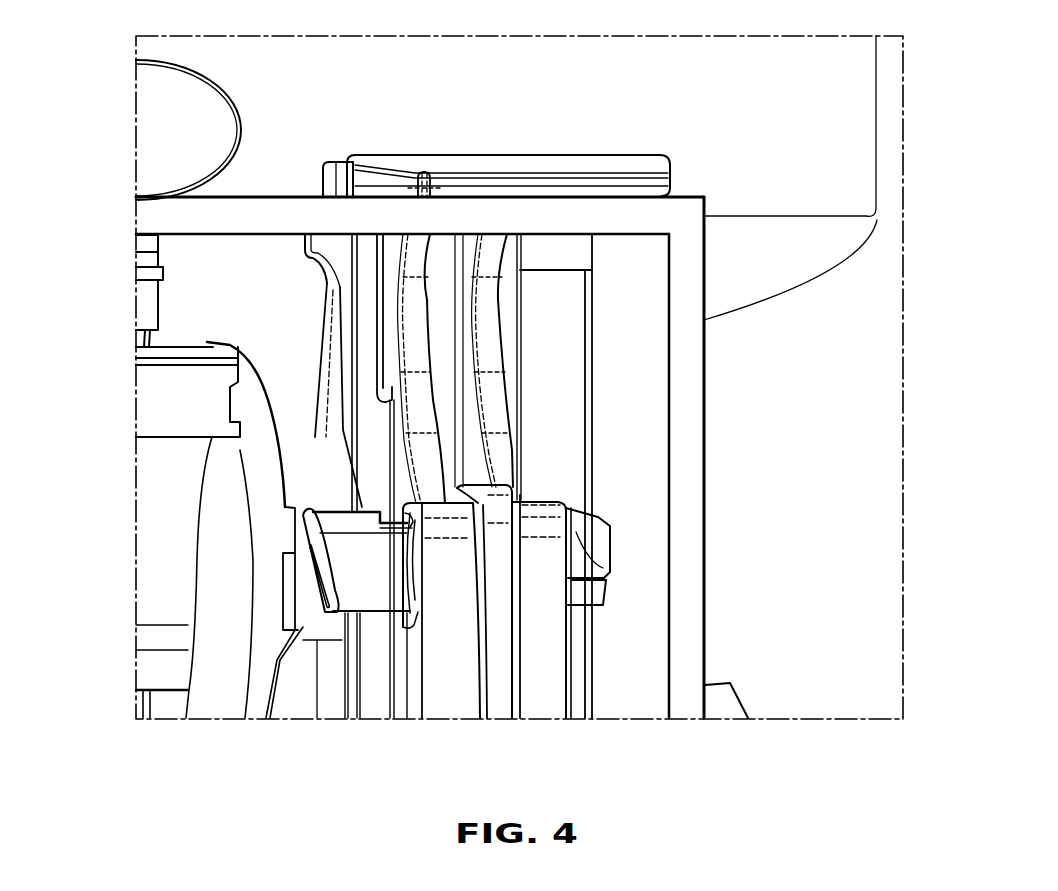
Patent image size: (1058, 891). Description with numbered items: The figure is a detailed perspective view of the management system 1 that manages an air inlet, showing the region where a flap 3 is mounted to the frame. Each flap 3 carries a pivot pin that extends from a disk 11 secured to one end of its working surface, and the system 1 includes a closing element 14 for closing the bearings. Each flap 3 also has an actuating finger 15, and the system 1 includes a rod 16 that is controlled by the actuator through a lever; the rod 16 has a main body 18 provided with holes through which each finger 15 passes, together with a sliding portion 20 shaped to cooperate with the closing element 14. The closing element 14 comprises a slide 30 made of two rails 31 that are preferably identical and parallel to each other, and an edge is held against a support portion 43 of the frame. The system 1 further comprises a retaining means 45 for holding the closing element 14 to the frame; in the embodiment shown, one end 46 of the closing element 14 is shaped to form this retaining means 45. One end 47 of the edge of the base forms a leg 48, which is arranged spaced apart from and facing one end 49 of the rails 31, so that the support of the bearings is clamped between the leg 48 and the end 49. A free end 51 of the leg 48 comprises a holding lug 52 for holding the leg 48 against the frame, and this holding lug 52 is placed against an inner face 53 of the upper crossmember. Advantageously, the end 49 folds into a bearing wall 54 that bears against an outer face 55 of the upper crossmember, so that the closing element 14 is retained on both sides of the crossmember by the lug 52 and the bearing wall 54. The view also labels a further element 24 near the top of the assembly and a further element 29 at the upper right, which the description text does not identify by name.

The management system 1 is at (122, 128).
The flap 3 is at (160, 540).
The disk 11 is at (218, 690).
The closing element 14 is at (380, 703).
The actuating finger 15 is at (587, 590).
The rod 16 is at (562, 723).
The main body 18 is at (452, 693).
The sliding portion 20 is at (503, 693).
The support plate 24 is at (383, 133).
The housing wall 29 is at (723, 140).
The slide 30 is at (447, 232).
The rails 31 is at (415, 328).
The support portion 43 is at (333, 128).
The retaining means 45 is at (287, 328).
The end of the closing element 46 is at (550, 185).
The end of the edge 47 is at (348, 353).
The leg 48 is at (347, 284).
The end of the rails 49 is at (422, 237).
The free end 51 is at (330, 182).
The holding lug 52 is at (304, 246).
The inner face 53 is at (633, 234).
The bearing wall 54 is at (493, 165).
The outer face 55 is at (684, 195).